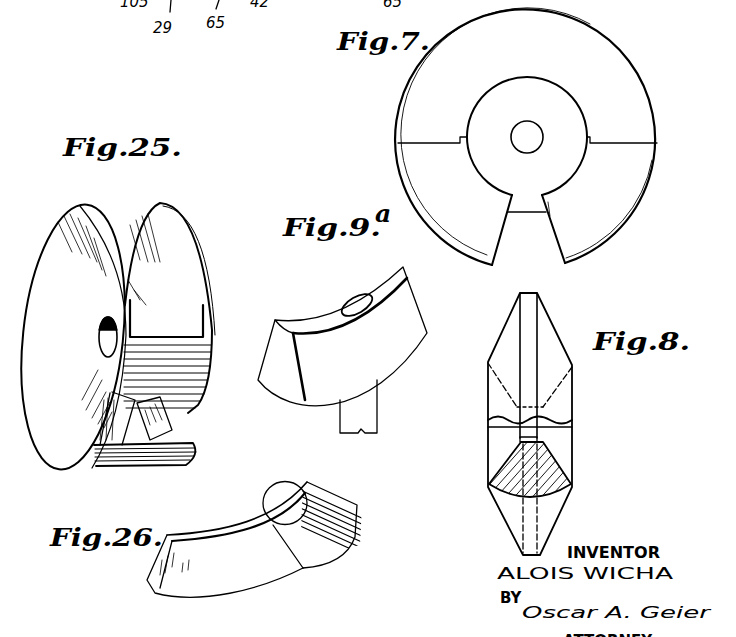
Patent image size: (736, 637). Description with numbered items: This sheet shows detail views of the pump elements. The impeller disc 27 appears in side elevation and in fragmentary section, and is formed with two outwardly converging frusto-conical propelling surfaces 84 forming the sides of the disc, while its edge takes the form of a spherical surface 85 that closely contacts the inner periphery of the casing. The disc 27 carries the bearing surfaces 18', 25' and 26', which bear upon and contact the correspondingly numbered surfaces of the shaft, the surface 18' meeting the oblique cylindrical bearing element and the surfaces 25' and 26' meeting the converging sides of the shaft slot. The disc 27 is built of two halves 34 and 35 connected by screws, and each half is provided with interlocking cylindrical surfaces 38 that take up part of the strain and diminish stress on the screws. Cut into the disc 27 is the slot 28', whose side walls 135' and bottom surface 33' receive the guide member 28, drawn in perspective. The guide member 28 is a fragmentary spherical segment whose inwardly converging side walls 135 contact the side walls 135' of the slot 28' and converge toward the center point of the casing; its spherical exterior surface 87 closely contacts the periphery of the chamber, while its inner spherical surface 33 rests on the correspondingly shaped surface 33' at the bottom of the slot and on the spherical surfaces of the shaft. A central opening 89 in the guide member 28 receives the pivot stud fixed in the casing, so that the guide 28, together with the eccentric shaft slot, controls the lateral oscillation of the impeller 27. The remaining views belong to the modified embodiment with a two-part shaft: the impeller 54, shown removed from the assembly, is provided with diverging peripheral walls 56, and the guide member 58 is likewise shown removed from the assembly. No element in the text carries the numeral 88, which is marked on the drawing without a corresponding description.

In FIG. 7, the frusto-conical propelling surfaces 84 is at (592, 41).
In FIG. 8, the frusto-conical propelling surfaces 84 is at (503, 331).
In FIG. 7, the impeller disc 27 is at (648, 77).
In FIG. 8, the impeller disc 27 is at (578, 406).
In FIG. 7, the bearing surface 26' is at (538, 135).
In FIG. 8, the bearing surface 26' is at (529, 475).
In FIG. 7, the bearing surface 18' is at (530, 126).
In FIG. 8, the bearing surface 18' is at (491, 441).
In FIG. 7, the interlocking cylindrical surfaces 38 is at (461, 138).
In FIG. 7, the slot 28' is at (526, 245).
In FIG. 8, the slot 28' is at (564, 498).
In FIG. 7, the side walls 135 is at (527, 245).
In FIG. 9A, the side walls 135 is at (287, 371).
In FIG. 7, the side walls of the slot 135' is at (620, 212).
In FIG. 8, the side walls of the slot 135' is at (600, 524).
In FIG. 7, the spherical surface at bottom of slot 33' is at (572, 193).
In FIG. 8, the spherical surface at bottom of slot 33' is at (471, 508).
In FIG. 7, the impeller half 35 is at (416, 99).
In FIG. 8, the impeller half 35 is at (550, 357).
In FIG. 7, the impeller half 34 is at (402, 170).
In FIG. 8, the impeller half 34 is at (572, 488).
In FIG. 7, the segment 88 is at (447, 304).
In FIG. 9A, the segment 88 is at (277, 377).
In FIG. 8, the spherical surface 85 is at (538, 294).
In FIG. 8, the bearing surface 25' is at (468, 475).
In FIG. 9A, the inner spherical surface 33 is at (342, 336).
In FIG. 9A, the central opening 89 is at (374, 310).
In FIG. 9A, the guide member 28 is at (349, 275).
In FIG. 9A, the spherical exterior surface 87 is at (400, 367).
In FIG. 25, the diverging peripheral walls 56 is at (93, 204).
In FIG. 25, the impeller 54 is at (193, 224).
In FIG. 26, the guide member 58 is at (322, 578).